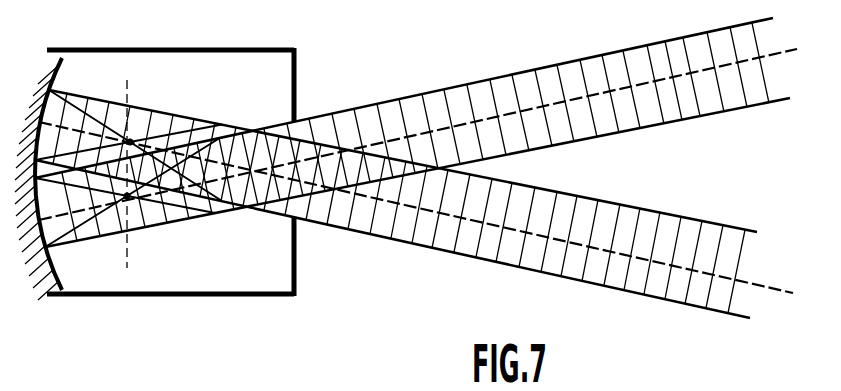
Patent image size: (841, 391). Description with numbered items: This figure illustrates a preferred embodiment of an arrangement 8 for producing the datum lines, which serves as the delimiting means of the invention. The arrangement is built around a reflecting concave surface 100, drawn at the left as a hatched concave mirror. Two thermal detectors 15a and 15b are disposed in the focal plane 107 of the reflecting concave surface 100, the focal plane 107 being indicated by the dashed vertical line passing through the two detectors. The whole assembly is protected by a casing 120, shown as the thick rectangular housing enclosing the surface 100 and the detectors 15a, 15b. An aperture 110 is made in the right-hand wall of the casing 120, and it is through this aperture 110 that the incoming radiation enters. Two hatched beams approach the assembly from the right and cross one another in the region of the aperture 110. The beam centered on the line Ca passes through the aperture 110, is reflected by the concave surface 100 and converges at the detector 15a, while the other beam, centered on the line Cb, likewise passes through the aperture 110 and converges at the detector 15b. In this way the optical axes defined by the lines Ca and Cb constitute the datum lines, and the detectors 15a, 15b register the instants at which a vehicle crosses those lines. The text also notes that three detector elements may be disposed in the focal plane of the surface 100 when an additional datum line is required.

The reflecting concave surface 100 is at (46, 268).
The casing 120 is at (243, 297).
The aperture 110 is at (298, 188).
The thermal detector 15a is at (130, 200).
The thermal detector 15b is at (131, 140).
The focal plane 107 is at (101, 186).
The arrangement for producing the datum lines 8 is at (180, 334).
The line Ca is at (416, 131).
The line Cb is at (414, 204).